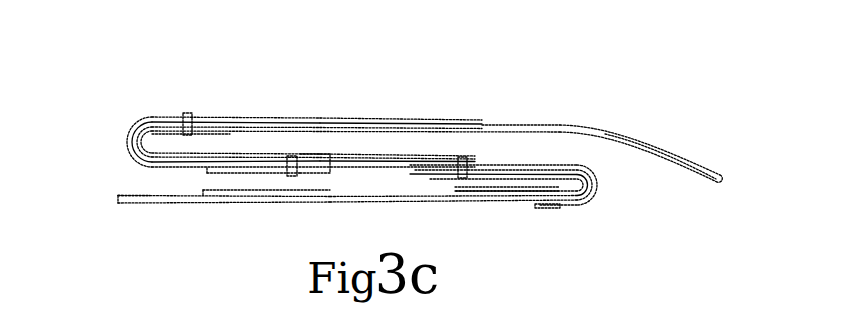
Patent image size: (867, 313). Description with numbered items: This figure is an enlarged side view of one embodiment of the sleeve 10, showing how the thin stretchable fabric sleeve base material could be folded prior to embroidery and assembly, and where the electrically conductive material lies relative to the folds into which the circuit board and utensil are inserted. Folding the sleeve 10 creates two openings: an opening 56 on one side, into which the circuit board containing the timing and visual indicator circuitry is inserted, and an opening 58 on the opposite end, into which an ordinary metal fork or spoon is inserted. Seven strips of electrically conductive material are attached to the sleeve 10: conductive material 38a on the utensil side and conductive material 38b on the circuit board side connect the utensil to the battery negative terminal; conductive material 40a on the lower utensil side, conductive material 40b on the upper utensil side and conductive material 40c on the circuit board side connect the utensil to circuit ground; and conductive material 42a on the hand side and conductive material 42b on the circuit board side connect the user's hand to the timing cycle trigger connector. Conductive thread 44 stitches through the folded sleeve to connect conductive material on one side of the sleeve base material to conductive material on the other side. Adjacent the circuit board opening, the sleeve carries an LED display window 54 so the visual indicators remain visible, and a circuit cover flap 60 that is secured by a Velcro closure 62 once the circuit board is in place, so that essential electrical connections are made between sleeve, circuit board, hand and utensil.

The sleeve base material 10 is at (145, 203).
The conductive material to connect utensil to battery negative terminal—utensil side 38a is at (493, 192).
The conductive material to connect utensil to battery negative terminal—circuit boar 38b is at (405, 160).
The conductive material to connect utensil to circuit ground—lower utensil side 40a is at (280, 193).
The conductive material to connect utensil to circuit ground—upper utensil side 40b is at (233, 173).
The conductive material to connect utensil to circuit ground—circuit board side 40c is at (316, 157).
The conductive material to connect user's hand to timing cycle trigger connector—han 42a is at (390, 123).
The conductive material to connect user's hand to timing cycle trigger connector—cir 42b is at (148, 132).
The conductive thread 44 is at (188, 113).
The LED display window 54 is at (537, 125).
The opening in sleeve where circuit board is inserted 56 is at (550, 148).
The opening in sleeve where utensil is inserted 58 is at (140, 179).
The circuit cover flap 60 is at (657, 150).
The Velcro closure 62 is at (695, 172).